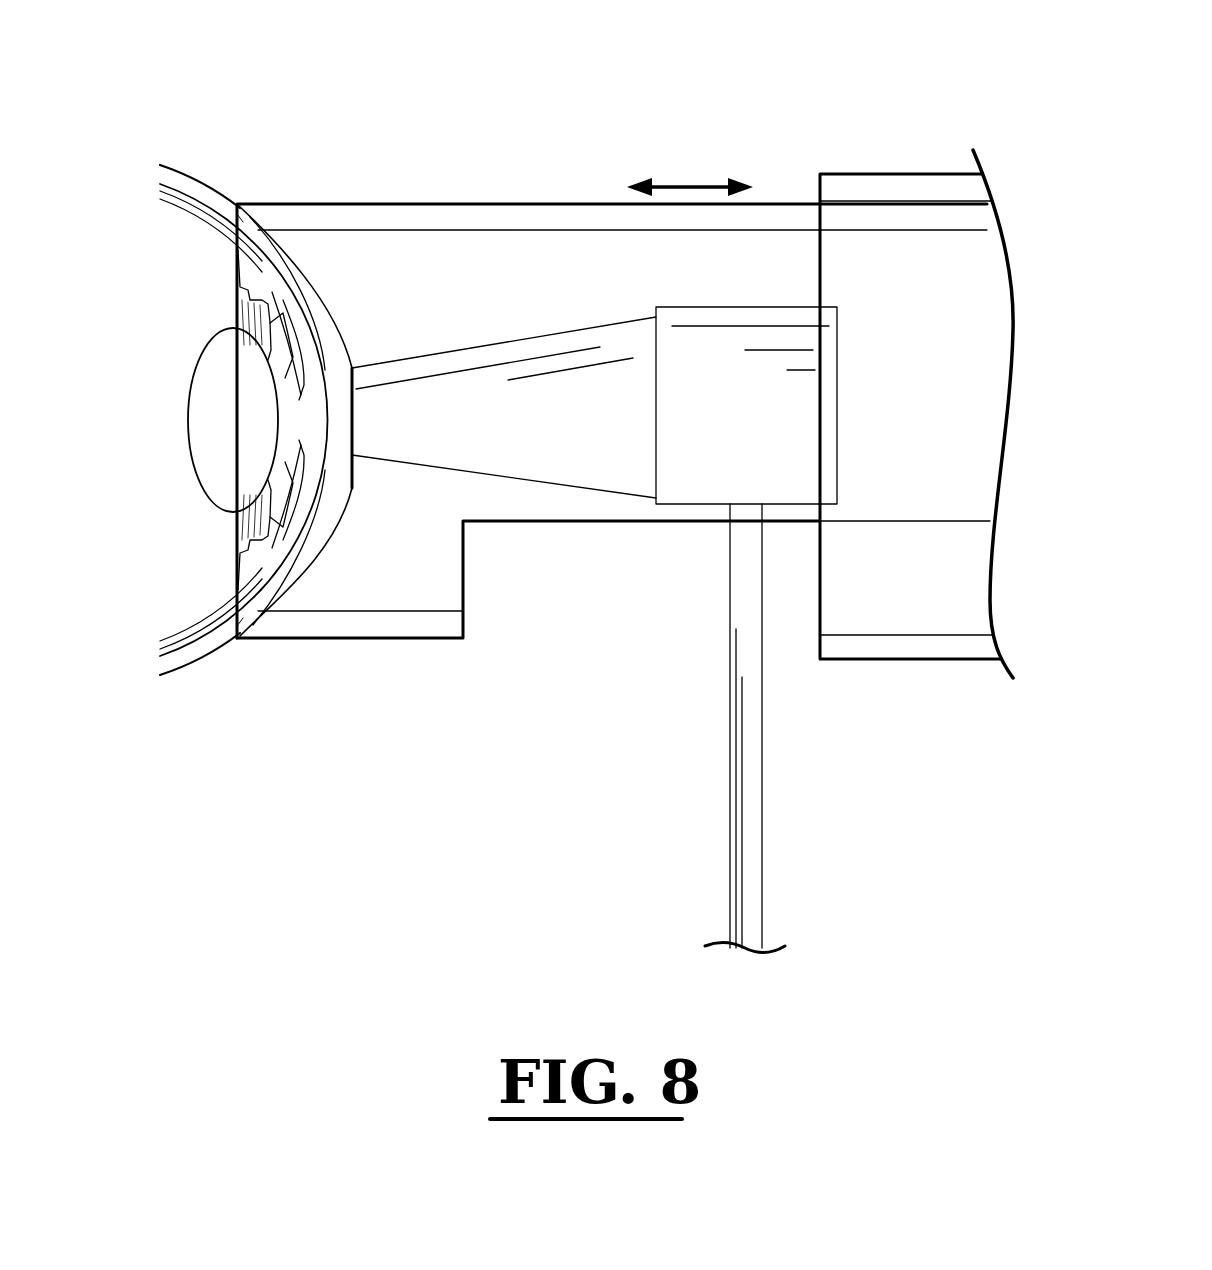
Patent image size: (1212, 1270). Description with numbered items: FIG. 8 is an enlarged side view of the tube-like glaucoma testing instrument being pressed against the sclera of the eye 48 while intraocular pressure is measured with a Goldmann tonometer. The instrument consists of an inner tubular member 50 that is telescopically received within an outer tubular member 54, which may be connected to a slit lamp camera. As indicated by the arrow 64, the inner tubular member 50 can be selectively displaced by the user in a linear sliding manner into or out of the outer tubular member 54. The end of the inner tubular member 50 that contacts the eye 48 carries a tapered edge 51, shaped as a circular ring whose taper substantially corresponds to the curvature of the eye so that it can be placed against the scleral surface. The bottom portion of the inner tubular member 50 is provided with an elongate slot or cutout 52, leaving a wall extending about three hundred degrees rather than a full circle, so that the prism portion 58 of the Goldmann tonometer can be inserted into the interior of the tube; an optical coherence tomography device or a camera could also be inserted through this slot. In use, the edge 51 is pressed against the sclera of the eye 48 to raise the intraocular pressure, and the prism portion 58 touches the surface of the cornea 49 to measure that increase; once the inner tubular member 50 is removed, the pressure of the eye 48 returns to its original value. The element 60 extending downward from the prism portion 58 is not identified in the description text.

The eye 48 is at (293, 405).
The cornea 49 is at (330, 490).
The inner tubular member 50 is at (428, 216).
The tapered edge 51 is at (250, 210).
The elongate slot or cutout 52 is at (577, 590).
The outer tubular member 54 is at (892, 293).
The prism portion 58 is at (500, 413).
The cable 60 is at (757, 777).
The arrow 64 is at (675, 187).